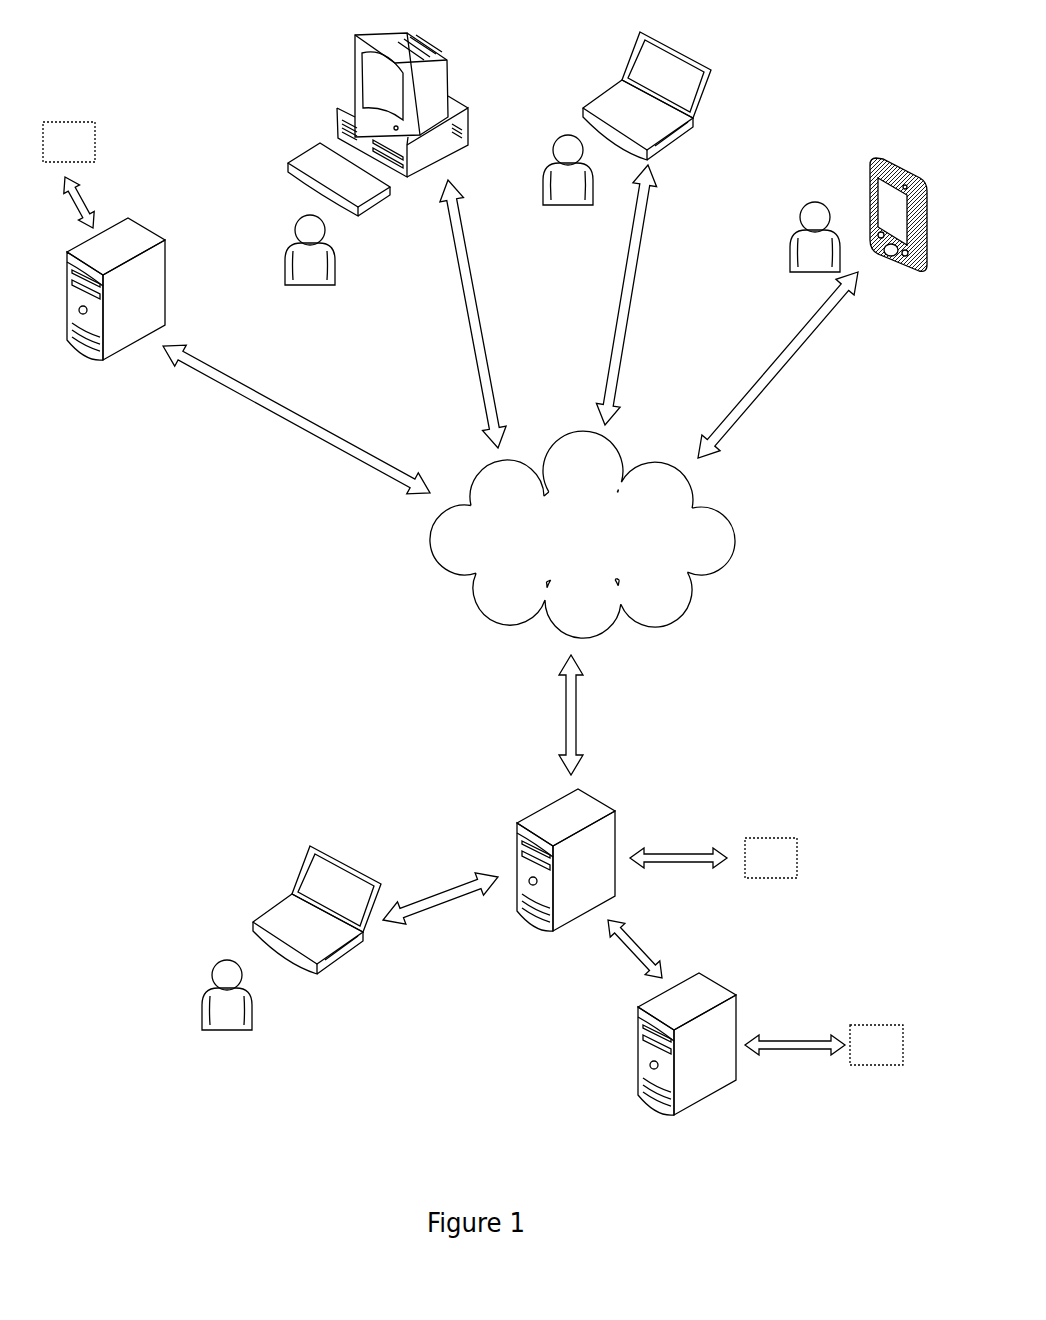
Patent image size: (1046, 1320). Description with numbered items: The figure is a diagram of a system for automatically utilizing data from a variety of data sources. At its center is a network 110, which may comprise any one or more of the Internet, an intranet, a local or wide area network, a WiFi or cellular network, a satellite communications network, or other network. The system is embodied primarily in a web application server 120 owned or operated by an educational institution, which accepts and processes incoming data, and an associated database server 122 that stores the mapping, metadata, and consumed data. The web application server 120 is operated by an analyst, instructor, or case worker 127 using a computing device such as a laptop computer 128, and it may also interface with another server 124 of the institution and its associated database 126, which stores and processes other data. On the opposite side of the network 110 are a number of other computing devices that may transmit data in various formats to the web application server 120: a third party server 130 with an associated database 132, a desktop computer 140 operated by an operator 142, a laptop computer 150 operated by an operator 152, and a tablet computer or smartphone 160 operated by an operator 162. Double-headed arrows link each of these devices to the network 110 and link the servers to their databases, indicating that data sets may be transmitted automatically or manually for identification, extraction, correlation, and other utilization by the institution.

The network 110 is at (582, 534).
The web application server 120 is at (573, 922).
The database server 122 is at (762, 836).
The another server 124 is at (637, 1078).
The associated database 126 is at (875, 1023).
The analyst, instructor, or case worker 127 is at (205, 1005).
The laptop computer 128 is at (278, 905).
The third party server 130 is at (170, 270).
The associated database 132 is at (70, 121).
The desktop computer 140 is at (362, 30).
The operator 142 is at (305, 287).
The laptop computer 150 is at (710, 78).
The operator 152 is at (557, 208).
The tablet computer or smartphone 160 is at (890, 157).
The operator 162 is at (790, 238).